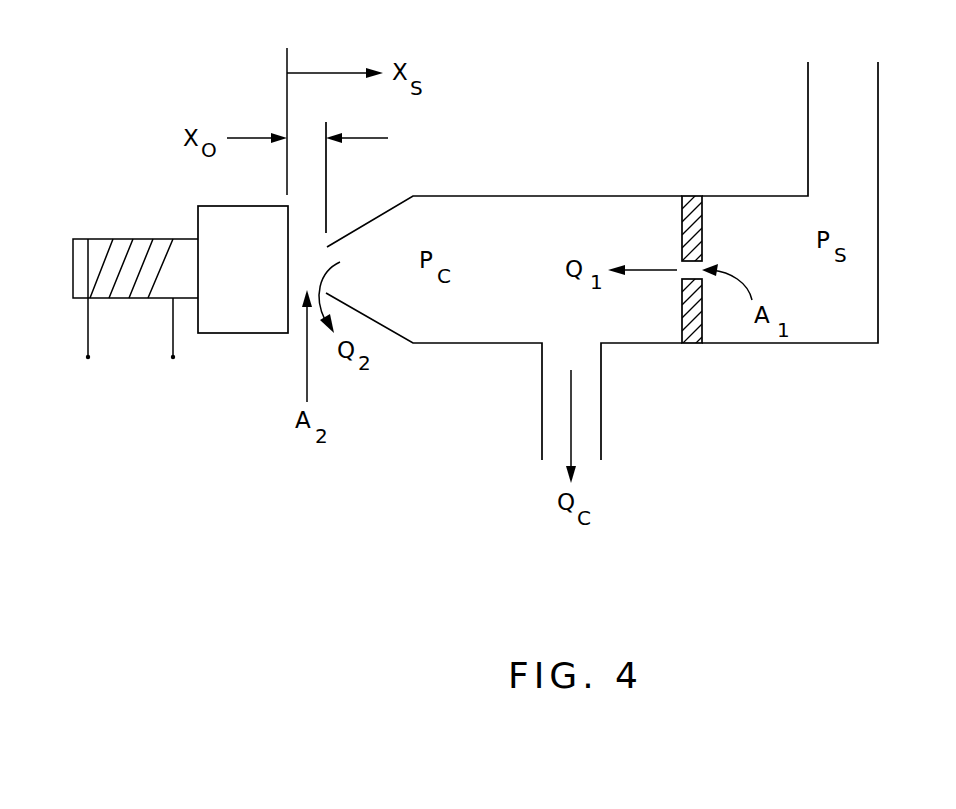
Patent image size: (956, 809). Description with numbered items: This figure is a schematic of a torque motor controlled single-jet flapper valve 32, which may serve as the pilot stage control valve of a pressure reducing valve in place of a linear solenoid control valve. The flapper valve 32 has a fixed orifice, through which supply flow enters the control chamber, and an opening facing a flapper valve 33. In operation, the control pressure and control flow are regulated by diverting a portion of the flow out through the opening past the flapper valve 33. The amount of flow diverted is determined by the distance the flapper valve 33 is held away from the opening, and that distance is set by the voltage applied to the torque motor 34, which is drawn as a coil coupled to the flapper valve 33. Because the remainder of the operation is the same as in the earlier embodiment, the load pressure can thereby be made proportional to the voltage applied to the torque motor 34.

The torque motor controlled single-jet flapper valve 32 is at (641, 116).
The flapper valve 33 is at (225, 328).
The torque motor 34 is at (102, 243).